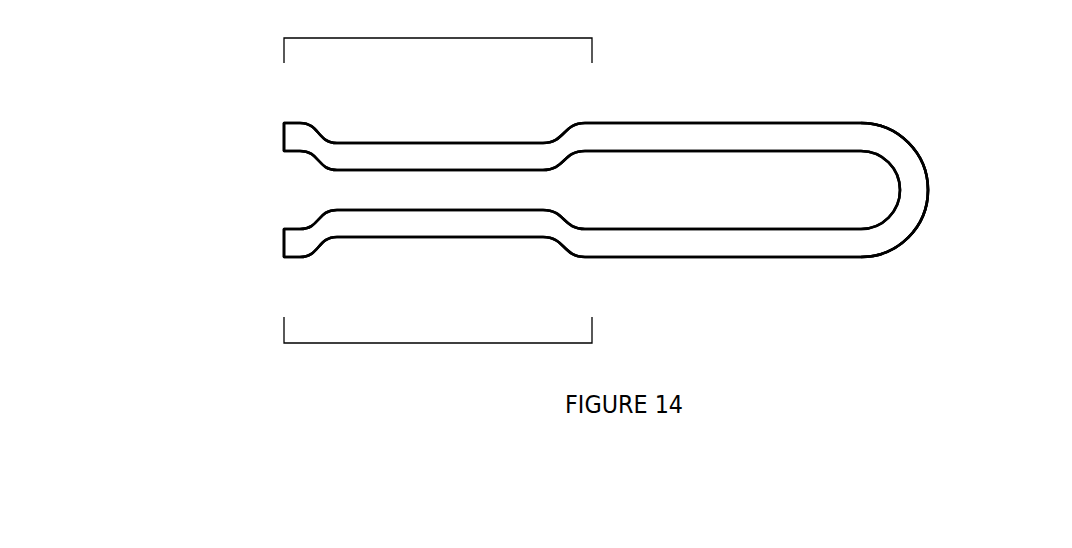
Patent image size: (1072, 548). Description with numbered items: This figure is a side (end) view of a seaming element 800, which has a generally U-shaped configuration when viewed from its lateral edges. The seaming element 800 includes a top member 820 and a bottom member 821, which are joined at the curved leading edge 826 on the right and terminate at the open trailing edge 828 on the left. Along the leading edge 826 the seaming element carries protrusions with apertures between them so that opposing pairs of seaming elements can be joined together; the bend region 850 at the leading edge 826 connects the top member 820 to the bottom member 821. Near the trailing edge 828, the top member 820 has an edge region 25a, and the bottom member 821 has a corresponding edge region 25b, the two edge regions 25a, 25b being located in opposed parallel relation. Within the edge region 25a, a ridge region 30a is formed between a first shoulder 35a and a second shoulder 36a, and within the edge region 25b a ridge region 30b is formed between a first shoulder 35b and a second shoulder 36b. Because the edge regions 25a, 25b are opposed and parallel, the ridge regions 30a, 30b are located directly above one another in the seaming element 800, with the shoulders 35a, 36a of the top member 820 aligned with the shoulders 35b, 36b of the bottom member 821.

The seaming element 800 is at (905, 290).
The trailing edge 828 is at (284, 138).
The edge region 25a is at (438, 39).
The edge region 25b is at (438, 342).
The shoulder 35a is at (312, 124).
The shoulder 35b is at (310, 255).
The ridge region 30a is at (392, 143).
The ridge region 30b is at (392, 238).
The shoulder 36a is at (566, 130).
The shoulder 36b is at (565, 252).
The top member 820 is at (720, 123).
The bottom member 821 is at (728, 256).
The bend region 850 is at (902, 158).
The leading edge 826 is at (928, 190).